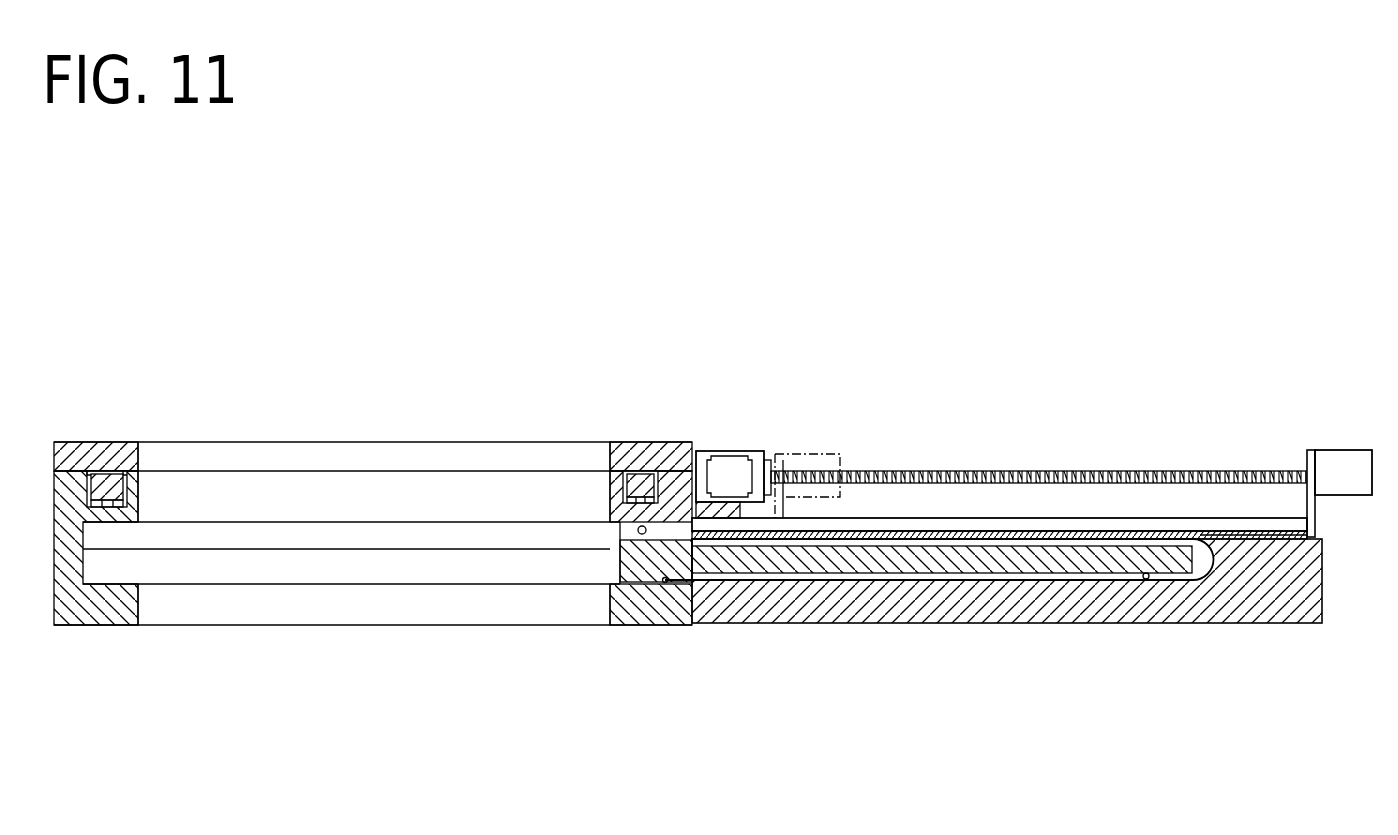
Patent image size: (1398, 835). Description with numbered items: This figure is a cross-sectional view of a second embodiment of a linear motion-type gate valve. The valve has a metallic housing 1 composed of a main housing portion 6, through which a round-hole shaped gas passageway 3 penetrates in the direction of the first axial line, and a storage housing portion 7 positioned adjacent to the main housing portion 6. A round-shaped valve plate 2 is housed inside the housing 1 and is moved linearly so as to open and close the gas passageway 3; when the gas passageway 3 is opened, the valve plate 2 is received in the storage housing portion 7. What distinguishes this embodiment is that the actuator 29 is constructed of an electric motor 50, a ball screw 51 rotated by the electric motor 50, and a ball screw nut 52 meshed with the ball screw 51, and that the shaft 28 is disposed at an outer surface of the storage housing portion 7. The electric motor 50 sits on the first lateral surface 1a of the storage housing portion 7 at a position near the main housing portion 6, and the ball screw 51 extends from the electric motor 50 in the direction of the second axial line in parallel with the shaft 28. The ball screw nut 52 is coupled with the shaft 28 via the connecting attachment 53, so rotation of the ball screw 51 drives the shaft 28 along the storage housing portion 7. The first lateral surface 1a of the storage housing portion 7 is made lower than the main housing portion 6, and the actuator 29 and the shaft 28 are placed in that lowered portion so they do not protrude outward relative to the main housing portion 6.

The housing 1 is at (713, 645).
The first lateral surface 1a is at (1233, 525).
The valve plate 2 is at (1005, 565).
The gas passageway 3 is at (375, 492).
The main housing portion 6 is at (415, 630).
The storage housing portion 7 is at (1140, 636).
The shaft 28 is at (915, 525).
The actuator 29 is at (1101, 433).
The electric motor 50 is at (710, 470).
The ball screw 51 is at (995, 470).
The ball screw nut 52 is at (814, 455).
The connecting attachment 53 is at (1312, 512).